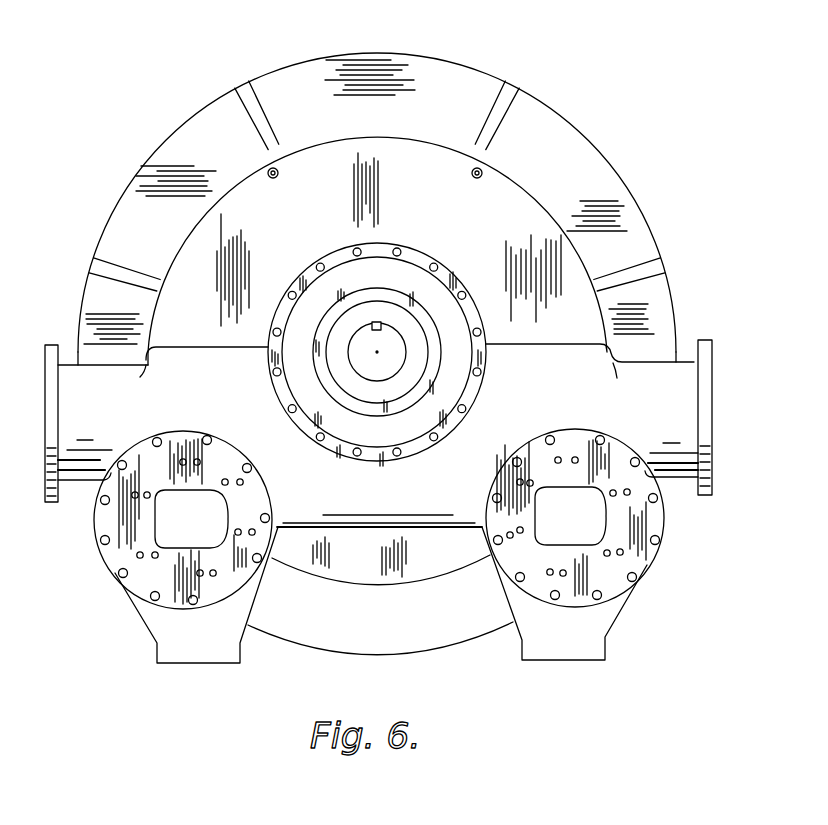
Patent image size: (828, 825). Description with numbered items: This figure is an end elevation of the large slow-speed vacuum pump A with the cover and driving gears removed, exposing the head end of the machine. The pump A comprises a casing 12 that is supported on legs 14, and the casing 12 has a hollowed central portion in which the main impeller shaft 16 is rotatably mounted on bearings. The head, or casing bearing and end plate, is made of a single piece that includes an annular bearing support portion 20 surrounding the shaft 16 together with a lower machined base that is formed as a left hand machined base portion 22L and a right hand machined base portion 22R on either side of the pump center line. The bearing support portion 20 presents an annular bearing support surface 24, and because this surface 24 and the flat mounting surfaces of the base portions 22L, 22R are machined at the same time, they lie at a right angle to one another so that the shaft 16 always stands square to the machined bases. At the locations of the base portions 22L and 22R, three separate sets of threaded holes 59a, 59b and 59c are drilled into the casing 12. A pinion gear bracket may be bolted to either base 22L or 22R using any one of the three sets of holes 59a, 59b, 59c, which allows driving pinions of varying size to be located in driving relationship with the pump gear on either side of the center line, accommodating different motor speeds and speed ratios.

The vacuum pump A is at (451, 49).
The casing 12 is at (586, 147).
The legs 14 is at (213, 655).
The main impeller shaft 16 is at (385, 338).
The annular bearing support portion 20 is at (423, 390).
The left hand machined base portion 22L is at (130, 587).
The right hand machined base portion 22R is at (647, 568).
The annular bearing support surface 24 is at (360, 392).
The threaded holes 59a is at (247, 463).
The threaded holes 59b is at (256, 528).
The threaded holes 59c is at (235, 532).